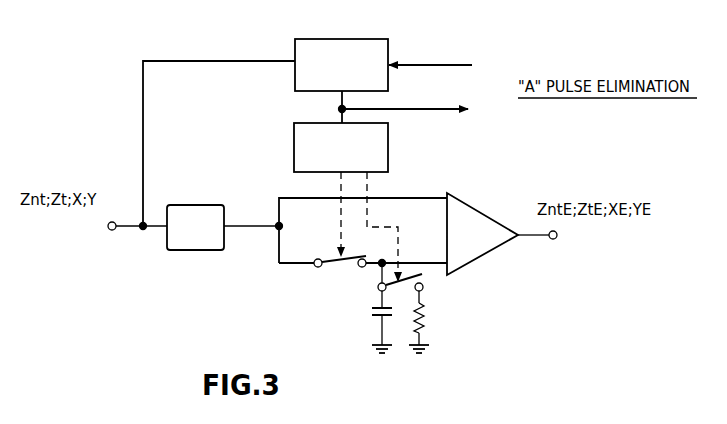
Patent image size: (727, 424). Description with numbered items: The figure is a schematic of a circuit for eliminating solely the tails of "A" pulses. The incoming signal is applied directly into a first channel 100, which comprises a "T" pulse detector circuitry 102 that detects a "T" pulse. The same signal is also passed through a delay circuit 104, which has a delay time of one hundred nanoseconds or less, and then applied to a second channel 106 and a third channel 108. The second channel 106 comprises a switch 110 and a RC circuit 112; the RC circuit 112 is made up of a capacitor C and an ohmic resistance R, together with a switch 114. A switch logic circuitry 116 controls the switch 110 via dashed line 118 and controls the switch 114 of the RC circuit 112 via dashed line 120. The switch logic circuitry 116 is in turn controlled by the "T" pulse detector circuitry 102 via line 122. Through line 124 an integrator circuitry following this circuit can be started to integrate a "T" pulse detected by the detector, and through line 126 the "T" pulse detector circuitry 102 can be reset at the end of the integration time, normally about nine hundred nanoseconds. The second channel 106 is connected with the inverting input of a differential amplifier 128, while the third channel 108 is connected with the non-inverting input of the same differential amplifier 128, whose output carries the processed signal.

The first channel 100 is at (249, 61).
The T pulse detector circuitry 102 is at (365, 44).
The delay circuit 104 is at (203, 205).
The second channel 106 is at (308, 268).
The third channel 108 is at (288, 197).
The switch 110 is at (342, 268).
The RC circuit 112 is at (425, 317).
The switch 114 is at (421, 278).
The switch logic circuitry 116 is at (378, 150).
The dashed line 118 is at (340, 235).
The dashed line 120 is at (393, 231).
The line 122 is at (338, 116).
The line 124 is at (421, 110).
The line 126 is at (441, 65).
The differential amplifier 128 is at (478, 248).
The capacitor C is at (372, 316).
The ohmic resistance R is at (425, 335).